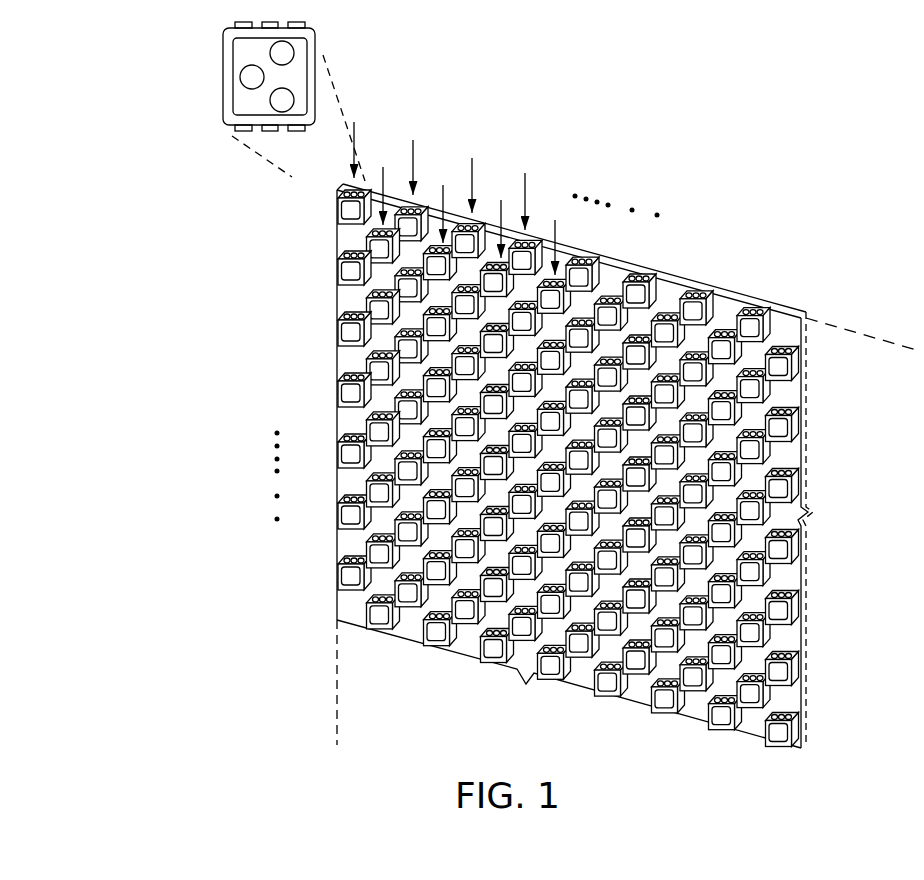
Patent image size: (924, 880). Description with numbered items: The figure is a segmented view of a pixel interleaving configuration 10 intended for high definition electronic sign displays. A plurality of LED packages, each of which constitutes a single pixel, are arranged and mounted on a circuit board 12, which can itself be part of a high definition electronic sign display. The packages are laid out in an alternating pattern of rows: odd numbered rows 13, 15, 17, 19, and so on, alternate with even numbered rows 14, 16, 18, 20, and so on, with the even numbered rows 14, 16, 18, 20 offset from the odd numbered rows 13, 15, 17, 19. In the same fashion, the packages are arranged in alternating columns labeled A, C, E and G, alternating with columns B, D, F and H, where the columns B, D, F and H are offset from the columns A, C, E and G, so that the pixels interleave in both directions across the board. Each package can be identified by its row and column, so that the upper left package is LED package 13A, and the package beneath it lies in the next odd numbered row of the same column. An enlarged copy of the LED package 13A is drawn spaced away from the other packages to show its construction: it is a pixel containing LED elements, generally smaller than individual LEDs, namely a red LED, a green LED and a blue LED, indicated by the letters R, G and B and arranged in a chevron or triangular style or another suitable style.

The pixel interleaving configuration 10 is at (524, 423).
The circuit board 12 is at (628, 466).
The odd numbered row 13 is at (327, 200).
The LED package 13A is at (224, 55).
The even numbered row 14 is at (365, 244).
The odd numbered row 15 is at (327, 263).
The even numbered row 16 is at (365, 305).
The odd numbered row 17 is at (327, 325).
The even numbered row 18 is at (365, 365).
The odd numbered row 19 is at (327, 386).
The even numbered row 20 is at (365, 426).